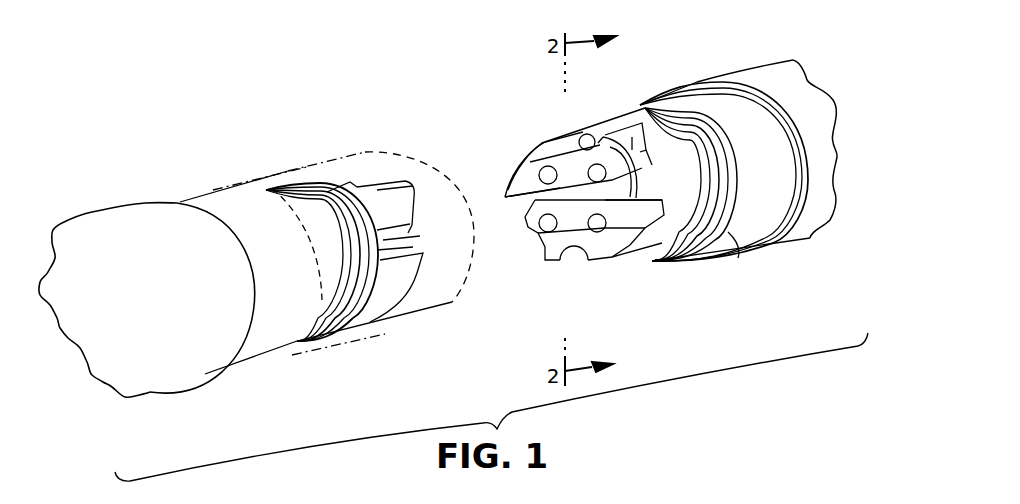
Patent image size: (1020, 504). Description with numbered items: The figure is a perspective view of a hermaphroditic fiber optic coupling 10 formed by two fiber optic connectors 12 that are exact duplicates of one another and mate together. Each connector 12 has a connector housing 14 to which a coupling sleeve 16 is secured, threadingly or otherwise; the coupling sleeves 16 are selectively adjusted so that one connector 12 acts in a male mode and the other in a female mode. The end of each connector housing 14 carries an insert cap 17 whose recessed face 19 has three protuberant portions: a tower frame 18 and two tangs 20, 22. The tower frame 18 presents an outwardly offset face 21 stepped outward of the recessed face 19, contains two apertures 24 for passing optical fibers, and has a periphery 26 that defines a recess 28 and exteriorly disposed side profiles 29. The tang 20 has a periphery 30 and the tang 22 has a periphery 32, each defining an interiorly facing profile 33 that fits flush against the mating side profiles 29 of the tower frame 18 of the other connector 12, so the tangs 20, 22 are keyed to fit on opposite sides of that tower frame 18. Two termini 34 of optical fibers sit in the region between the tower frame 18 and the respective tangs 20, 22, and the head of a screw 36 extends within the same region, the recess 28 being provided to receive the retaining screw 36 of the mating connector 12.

The fiber optic coupling 10 is at (691, 57).
The fiber optic connector 12 is at (215, 176).
The connector housing 14 is at (148, 218).
The coupling sleeve 16 is at (307, 163).
The insert cap 17 is at (677, 217).
The tower frame 18 is at (370, 183).
The recessed face 19 is at (683, 200).
The tang 20 is at (390, 293).
The outwardly offset face 21 is at (636, 176).
The tang 22 is at (653, 143).
The aperture 24 is at (548, 232).
The periphery 26 is at (540, 233).
The recess 28 is at (575, 252).
The exteriorly disposed side profile 29 is at (393, 213).
The periphery 30 is at (550, 133).
The periphery 32 is at (633, 143).
The interiorly facing profile 33 is at (410, 247).
The terminus 34 is at (532, 168).
The screw 36 is at (580, 130).